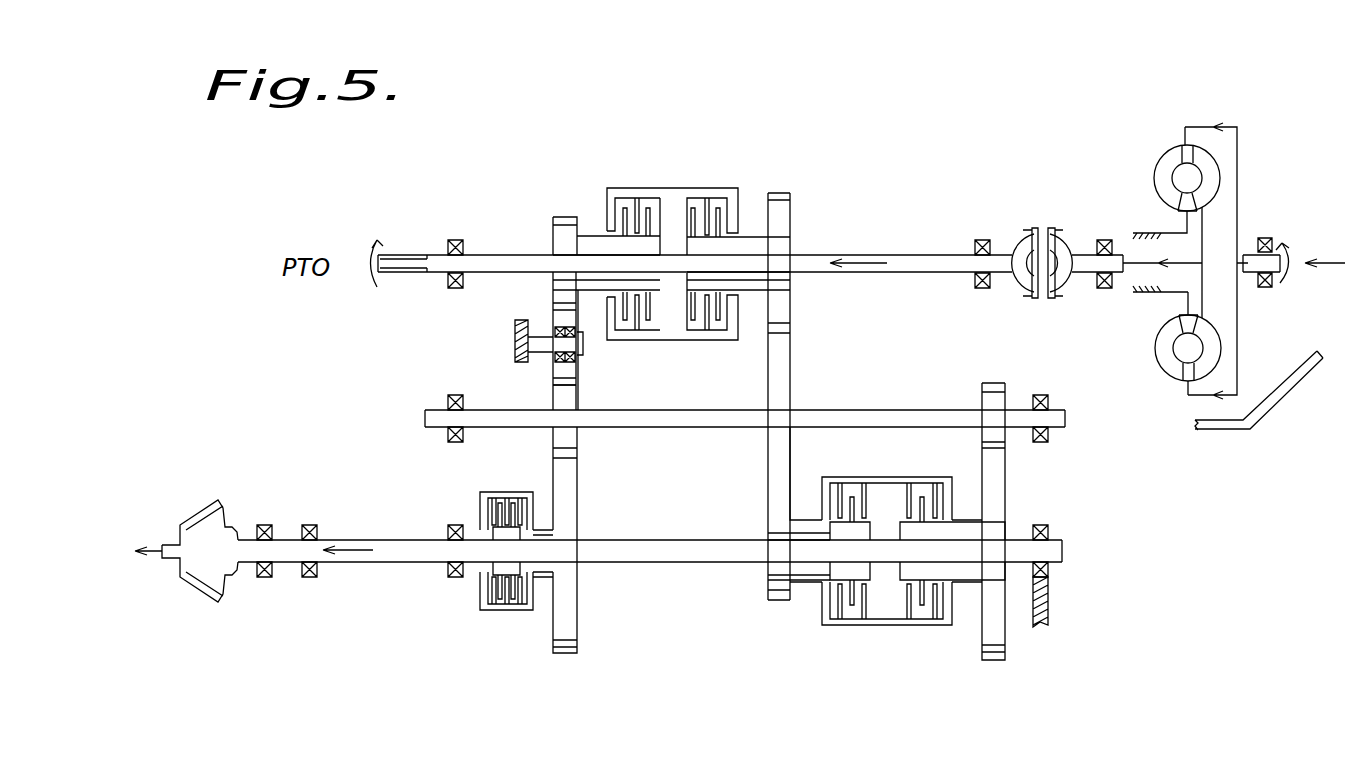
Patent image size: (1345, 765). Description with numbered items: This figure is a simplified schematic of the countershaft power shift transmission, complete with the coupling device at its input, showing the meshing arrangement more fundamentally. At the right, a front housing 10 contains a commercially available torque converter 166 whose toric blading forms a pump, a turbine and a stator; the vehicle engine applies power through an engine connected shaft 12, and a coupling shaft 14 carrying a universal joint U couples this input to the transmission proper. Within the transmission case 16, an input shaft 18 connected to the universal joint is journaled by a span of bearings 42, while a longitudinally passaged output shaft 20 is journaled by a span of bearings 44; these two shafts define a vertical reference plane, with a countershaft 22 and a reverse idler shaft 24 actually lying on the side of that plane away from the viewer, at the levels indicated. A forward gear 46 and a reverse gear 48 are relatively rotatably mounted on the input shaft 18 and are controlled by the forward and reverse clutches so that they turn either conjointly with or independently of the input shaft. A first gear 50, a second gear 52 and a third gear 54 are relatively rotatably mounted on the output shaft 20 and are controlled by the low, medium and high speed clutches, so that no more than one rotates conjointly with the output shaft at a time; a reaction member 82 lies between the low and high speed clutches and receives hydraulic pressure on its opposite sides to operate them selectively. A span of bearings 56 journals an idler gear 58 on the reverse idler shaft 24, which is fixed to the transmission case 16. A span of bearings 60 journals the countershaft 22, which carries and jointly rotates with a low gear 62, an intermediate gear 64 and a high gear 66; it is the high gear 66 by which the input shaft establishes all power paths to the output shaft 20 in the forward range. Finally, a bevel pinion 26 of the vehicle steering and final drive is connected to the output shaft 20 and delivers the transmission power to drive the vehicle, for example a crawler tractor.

The front housing 10 is at (1273, 398).
The engine connected shaft 12 is at (1248, 247).
The coupling shaft 14 is at (1075, 255).
The transmission case 16 is at (517, 335).
The input shaft 18 is at (925, 228).
The output shaft 20 is at (657, 515).
The countershaft 22 is at (703, 410).
The reverse idler shaft 24 is at (537, 338).
The bevel pinion 26 is at (218, 518).
The bearings 42 is at (457, 240).
The bearings 44 is at (455, 525).
The forward gear 46 is at (793, 223).
The reverse gear 48 is at (558, 237).
The first gear 50 is at (997, 468).
The second gear 52 is at (570, 492).
The third gear 54 is at (777, 520).
The bearings 56 is at (577, 360).
The idler gear 58 is at (557, 368).
The bearings 60 is at (463, 437).
The low gear 62 is at (983, 398).
The intermediate gear 64 is at (568, 442).
The high gear 66 is at (787, 360).
The reaction member 82 is at (885, 482).
The torque converter 166 is at (1172, 150).